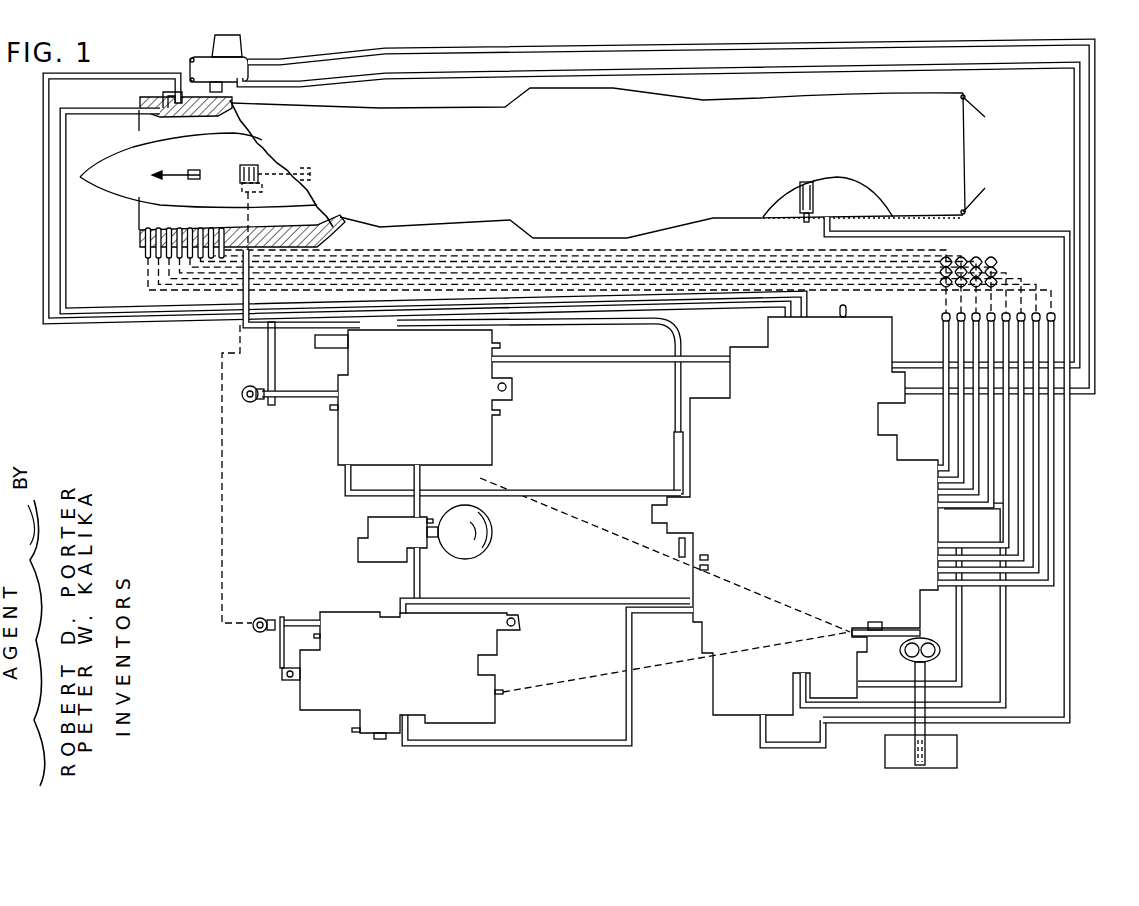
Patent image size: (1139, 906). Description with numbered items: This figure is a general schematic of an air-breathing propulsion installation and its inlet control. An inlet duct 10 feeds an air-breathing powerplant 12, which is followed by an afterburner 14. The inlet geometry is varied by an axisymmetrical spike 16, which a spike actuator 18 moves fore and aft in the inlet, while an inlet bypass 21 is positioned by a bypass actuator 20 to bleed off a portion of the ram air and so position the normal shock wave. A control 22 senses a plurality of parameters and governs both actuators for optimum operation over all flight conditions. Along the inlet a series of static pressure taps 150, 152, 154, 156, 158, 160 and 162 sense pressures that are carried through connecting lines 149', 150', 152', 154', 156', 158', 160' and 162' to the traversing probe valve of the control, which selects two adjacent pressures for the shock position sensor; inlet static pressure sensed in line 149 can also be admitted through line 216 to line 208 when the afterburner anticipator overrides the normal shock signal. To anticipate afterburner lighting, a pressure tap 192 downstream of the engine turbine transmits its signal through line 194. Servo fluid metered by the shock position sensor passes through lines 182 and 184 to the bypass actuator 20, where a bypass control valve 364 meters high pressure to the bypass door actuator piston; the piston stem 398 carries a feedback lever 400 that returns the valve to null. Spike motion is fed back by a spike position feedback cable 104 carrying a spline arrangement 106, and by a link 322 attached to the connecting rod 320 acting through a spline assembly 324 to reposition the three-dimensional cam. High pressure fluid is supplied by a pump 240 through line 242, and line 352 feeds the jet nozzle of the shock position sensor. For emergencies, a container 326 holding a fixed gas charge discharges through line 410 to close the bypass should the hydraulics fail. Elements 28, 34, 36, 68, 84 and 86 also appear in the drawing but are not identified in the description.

The inlet duct 10 is at (311, 96).
The air-breathing powerplant 12 is at (579, 158).
The afterburner 14 is at (857, 143).
The axisymmetrical spike 16 is at (126, 178).
The spike actuator 18 is at (269, 164).
The bypass actuator 20 is at (406, 669).
The inlet bypass 21 is at (322, 232).
The control 22 is at (801, 395).
The inlet pressure conduit 28 is at (82, 108).
The bracket 34 is at (152, 87).
The inlet pressure pipe 36 is at (112, 72).
The probe housing 68 is at (250, 58).
The pressure line 84 is at (340, 90).
The pressure line 86 is at (290, 95).
The spike position feedback cable 104 is at (570, 326).
The spline arrangement 106 is at (678, 545).
The line 149 is at (238, 232).
The static pressure tap 150 is at (126, 244).
The static pressure tap 152 is at (131, 243).
The static pressure tap 154 is at (137, 235).
The static pressure tap 156 is at (143, 228).
The static pressure tap 158 is at (179, 228).
The static pressure tap 160 is at (194, 218).
The static pressure tap 162 is at (219, 220).
The connecting line 149' is at (940, 414).
The connecting line 150' is at (950, 432).
The connecting line 152' is at (940, 438).
The connecting line 154' is at (964, 445).
The connecting line 156' is at (955, 451).
The connecting line 158' is at (904, 397).
The connecting line 160' is at (928, 402).
The connecting line 162' is at (917, 407).
The line 182 is at (578, 598).
The line 184 is at (625, 632).
The pressure tap 192 is at (818, 200).
The line 194 is at (986, 226).
The line 208 is at (771, 745).
The line 216 is at (1008, 656).
The pump 240 is at (925, 638).
The line 242 is at (897, 637).
The connecting rod 320 is at (305, 400).
The link 322 is at (276, 372).
The spline assembly 324 is at (302, 332).
The container 326 is at (495, 539).
The line 352 is at (598, 492).
The bypass control valve 364 is at (378, 740).
The piston stem 398 is at (289, 620).
The feedback lever 400 is at (280, 650).
The line 410 is at (422, 574).